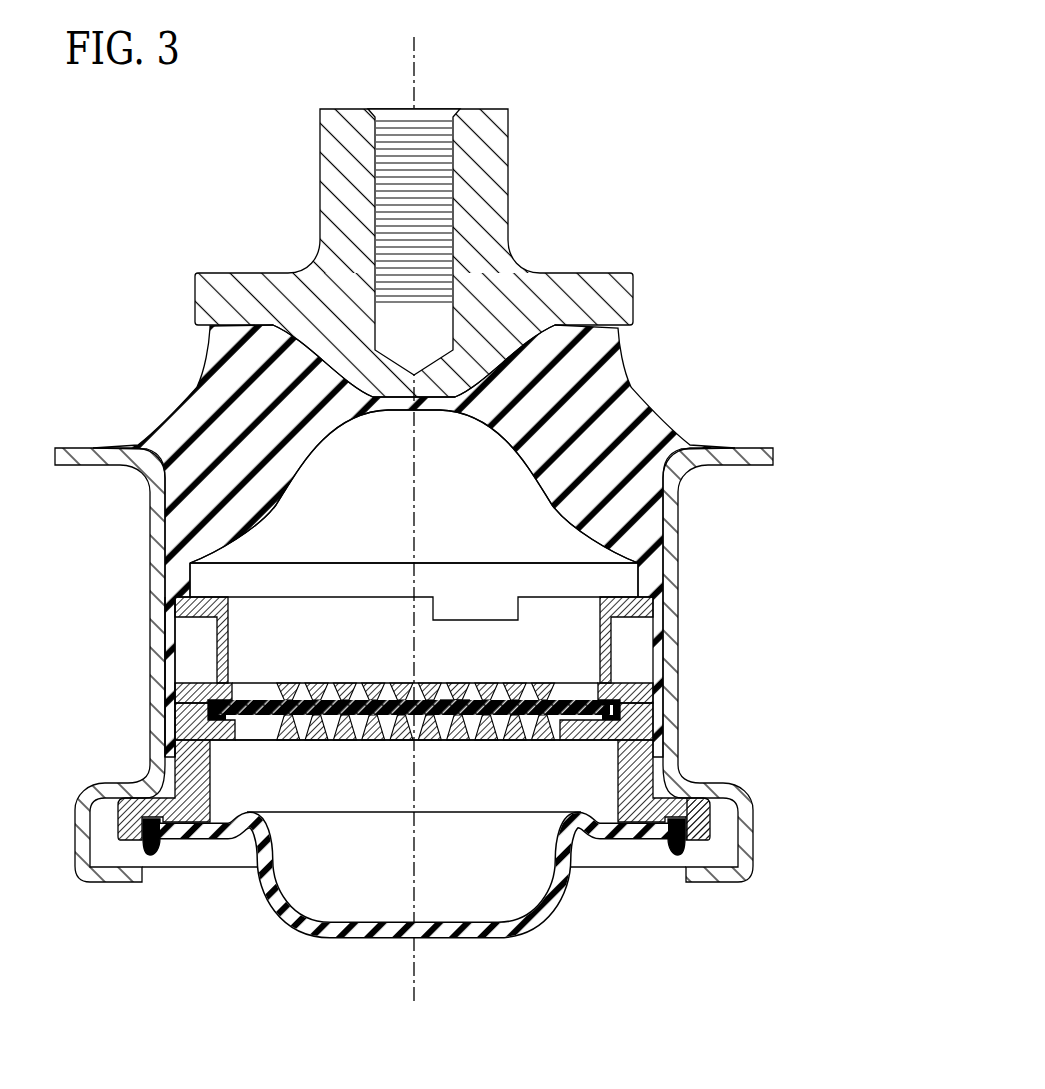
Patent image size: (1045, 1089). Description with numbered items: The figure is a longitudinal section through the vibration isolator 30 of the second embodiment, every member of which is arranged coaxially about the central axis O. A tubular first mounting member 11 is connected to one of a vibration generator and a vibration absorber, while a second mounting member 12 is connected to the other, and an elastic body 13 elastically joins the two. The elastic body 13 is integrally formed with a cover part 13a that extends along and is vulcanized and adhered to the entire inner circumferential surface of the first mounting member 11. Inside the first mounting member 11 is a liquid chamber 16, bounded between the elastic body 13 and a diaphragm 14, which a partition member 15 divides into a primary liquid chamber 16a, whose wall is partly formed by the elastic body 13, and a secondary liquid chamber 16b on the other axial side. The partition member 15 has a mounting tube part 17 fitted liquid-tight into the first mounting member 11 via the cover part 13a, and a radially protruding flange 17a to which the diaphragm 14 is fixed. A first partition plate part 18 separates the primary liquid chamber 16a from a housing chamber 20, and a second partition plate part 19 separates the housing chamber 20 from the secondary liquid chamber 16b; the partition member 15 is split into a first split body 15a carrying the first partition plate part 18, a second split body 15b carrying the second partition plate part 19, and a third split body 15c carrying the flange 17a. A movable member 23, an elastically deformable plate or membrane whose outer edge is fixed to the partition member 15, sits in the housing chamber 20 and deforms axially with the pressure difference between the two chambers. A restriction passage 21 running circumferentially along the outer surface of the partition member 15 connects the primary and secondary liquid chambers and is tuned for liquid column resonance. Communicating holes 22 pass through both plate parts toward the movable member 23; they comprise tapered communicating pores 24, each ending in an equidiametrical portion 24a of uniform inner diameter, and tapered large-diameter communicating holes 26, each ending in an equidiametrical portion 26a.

The vibration isolator 30 is at (684, 106).
The central axis O is at (416, 62).
The first mounting member 11 is at (158, 533).
The second mounting member 12 is at (320, 175).
The elastic body 13 is at (200, 407).
The cover part 13a is at (168, 658).
The diaphragm 14 is at (358, 940).
The partition member 15 is at (755, 587).
The first split body 15a is at (180, 693).
The second split body 15b is at (185, 723).
The third split body 15c is at (190, 772).
The liquid chamber 16 is at (492, 485).
The primary liquid chamber 16a is at (400, 524).
The secondary liquid chamber 16b is at (400, 790).
The mounting tube part 17 is at (647, 608).
The flange 17a is at (703, 820).
The first partition plate part 18 is at (597, 684).
The second partition plate part 19 is at (617, 762).
The housing chamber 20 is at (244, 715).
The restriction passage 21 is at (188, 633).
The communicating holes 22 is at (414, 660).
The movable member 23 is at (582, 718).
The communicating pores 24 is at (335, 697).
The equidiametrical portion 24a is at (462, 698).
The large-diameter communicating holes 26 is at (230, 697).
The equidiametrical portion 26a is at (572, 697).